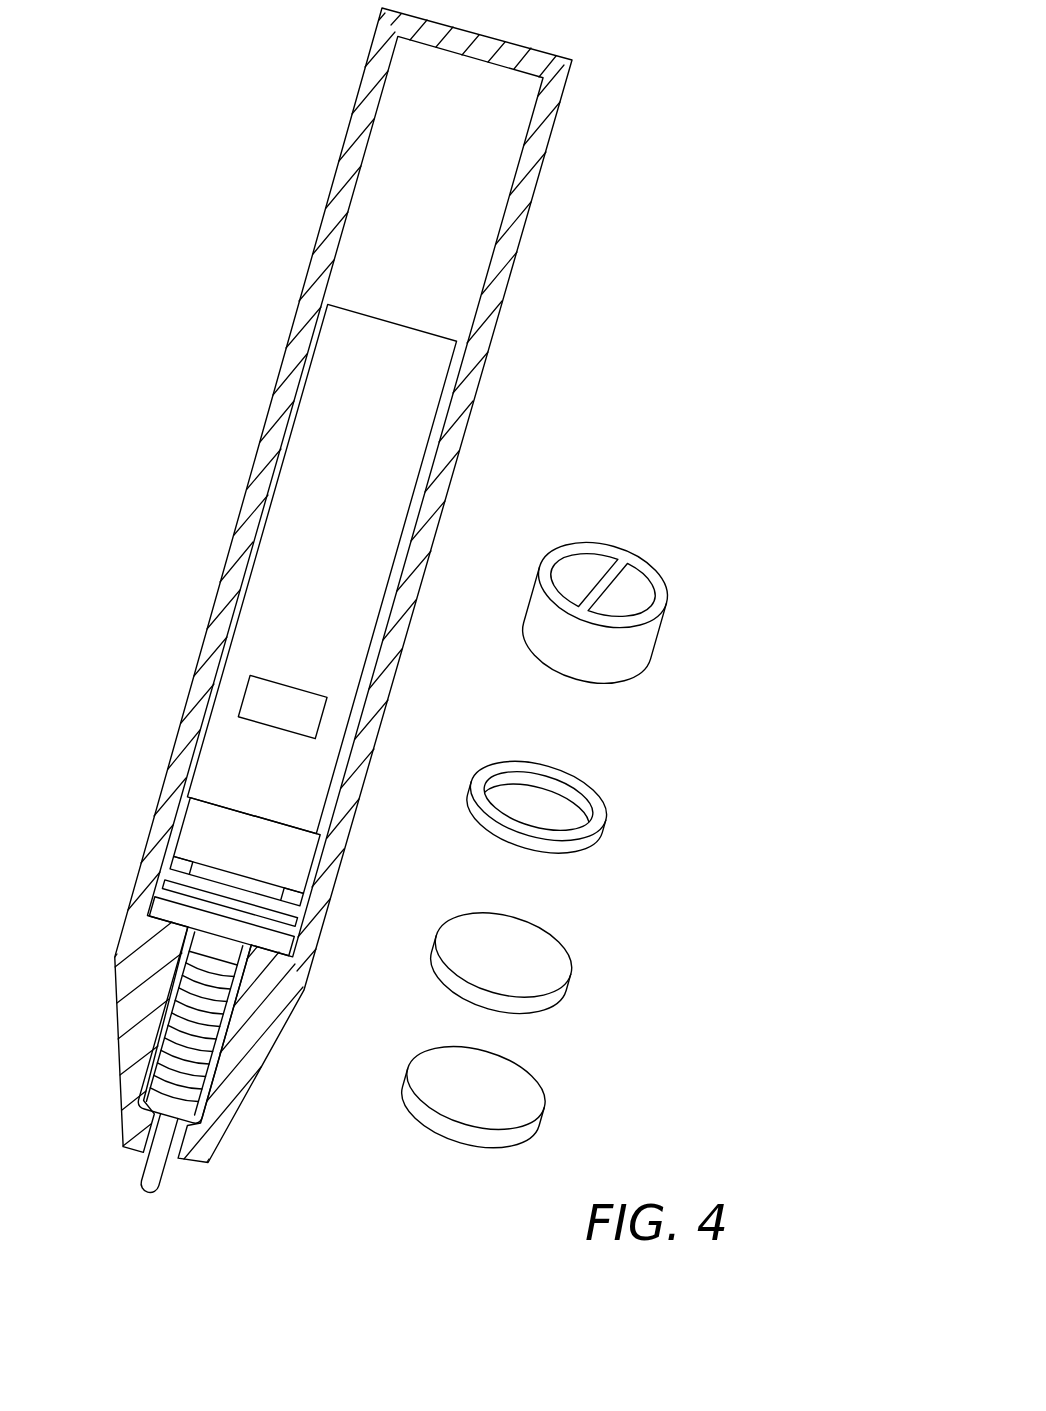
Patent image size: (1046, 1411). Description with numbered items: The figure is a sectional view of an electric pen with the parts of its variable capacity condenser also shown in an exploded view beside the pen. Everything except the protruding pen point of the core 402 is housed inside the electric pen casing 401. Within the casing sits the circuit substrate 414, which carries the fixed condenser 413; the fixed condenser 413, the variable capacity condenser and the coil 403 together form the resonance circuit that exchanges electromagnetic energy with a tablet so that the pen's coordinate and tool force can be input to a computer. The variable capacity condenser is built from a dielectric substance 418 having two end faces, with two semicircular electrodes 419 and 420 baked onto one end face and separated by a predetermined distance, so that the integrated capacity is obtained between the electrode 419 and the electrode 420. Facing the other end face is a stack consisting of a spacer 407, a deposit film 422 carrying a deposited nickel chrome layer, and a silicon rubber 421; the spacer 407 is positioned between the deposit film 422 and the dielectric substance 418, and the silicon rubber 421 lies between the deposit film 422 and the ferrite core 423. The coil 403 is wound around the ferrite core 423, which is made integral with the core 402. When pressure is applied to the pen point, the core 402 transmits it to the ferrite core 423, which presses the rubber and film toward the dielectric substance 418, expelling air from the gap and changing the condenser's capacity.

The electric pen casing 401 is at (527, 152).
The circuit substrate 414 is at (385, 318).
The condenser 413 is at (293, 687).
The electrode 420 is at (590, 563).
The electrode 419 is at (643, 587).
The dielectric substance 418 is at (203, 827).
The spacer 407 is at (172, 868).
The deposit film 422 is at (165, 885).
The silicon rubber 421 is at (172, 910).
The coil 403 is at (212, 1103).
The ferrite core 423 is at (190, 1133).
The core 402 is at (163, 1188).